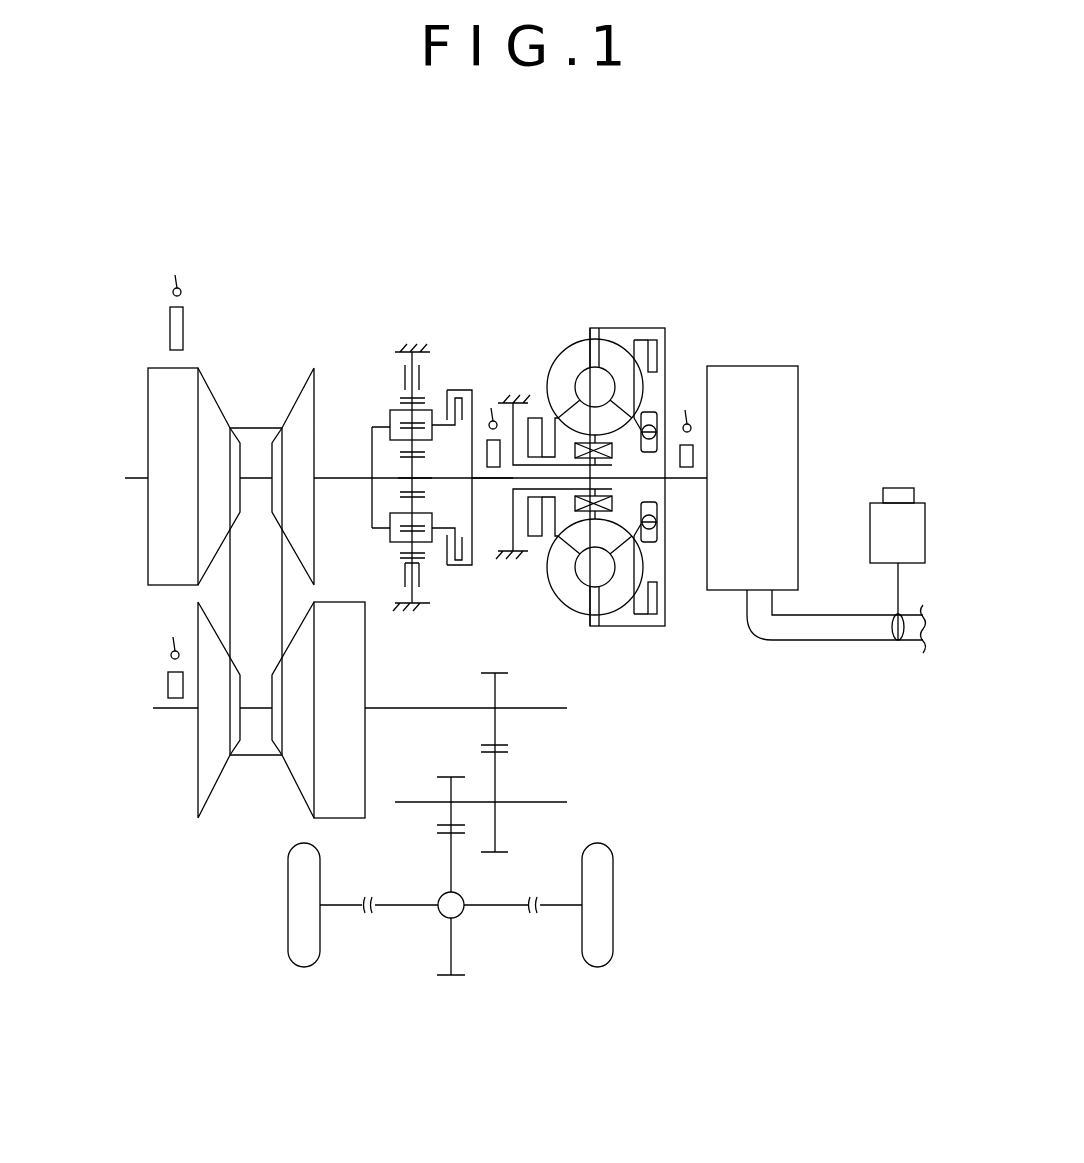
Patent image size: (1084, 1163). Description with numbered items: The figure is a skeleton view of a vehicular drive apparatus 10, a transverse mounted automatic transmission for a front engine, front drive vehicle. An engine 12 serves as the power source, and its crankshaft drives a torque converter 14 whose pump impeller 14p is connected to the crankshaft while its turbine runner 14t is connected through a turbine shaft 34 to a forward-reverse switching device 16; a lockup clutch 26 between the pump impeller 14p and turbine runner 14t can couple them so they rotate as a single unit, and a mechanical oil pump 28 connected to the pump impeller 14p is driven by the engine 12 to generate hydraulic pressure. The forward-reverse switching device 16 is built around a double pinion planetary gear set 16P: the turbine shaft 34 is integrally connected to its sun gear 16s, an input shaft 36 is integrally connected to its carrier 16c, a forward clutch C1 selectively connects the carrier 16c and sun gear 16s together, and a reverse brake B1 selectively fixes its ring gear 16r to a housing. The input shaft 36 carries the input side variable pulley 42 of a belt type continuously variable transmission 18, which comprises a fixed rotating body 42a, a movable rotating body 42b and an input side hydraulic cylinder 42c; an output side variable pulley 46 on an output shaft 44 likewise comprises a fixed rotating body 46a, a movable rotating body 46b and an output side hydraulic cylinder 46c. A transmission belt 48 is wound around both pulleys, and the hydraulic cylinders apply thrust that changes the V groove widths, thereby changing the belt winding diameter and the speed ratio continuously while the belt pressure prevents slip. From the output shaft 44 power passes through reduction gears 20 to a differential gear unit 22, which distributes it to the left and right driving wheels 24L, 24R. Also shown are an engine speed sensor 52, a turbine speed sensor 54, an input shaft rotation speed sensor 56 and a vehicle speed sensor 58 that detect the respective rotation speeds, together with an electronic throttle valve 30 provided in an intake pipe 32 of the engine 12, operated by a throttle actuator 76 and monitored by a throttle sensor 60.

The vehicular drive apparatus 10 is at (596, 237).
The engine 12 is at (787, 446).
The torque converter 14 is at (594, 316).
The pump impeller 14p is at (562, 597).
The turbine runner 14t is at (620, 602).
The forward-reverse switching device 16 is at (428, 302).
The planetary gear set 16P is at (381, 334).
The carrier 16c is at (389, 418).
The sun gear 16s is at (403, 488).
The ring gear 16r is at (403, 564).
The belt type continuously variable transmission 18 is at (243, 838).
The reduction gears 20 is at (566, 777).
The differential gear unit 22 is at (447, 915).
The left driving wheel 24L is at (298, 917).
The right driving wheel 24R is at (598, 917).
The lockup clutch 26 is at (656, 353).
The mechanical oil pump 28 is at (537, 428).
The electronic throttle valve 30 is at (907, 638).
The intake pipe 32 is at (830, 628).
The turbine shaft 34 is at (480, 487).
The input shaft 36 is at (332, 476).
The input side variable pulley 42 is at (211, 486).
The fixed rotating body 42a is at (302, 410).
The movable rotating body 42b is at (207, 407).
The input side hydraulic cylinder 42c is at (157, 400).
The output shaft 44 is at (415, 712).
The output side variable pulley 46 is at (276, 736).
The fixed rotating body 46a is at (207, 770).
The movable rotating body 46b is at (302, 760).
The output side hydraulic cylinder 46c is at (348, 677).
The transmission belt 48 is at (258, 426).
The engine speed sensor 52 is at (681, 455).
The turbine speed sensor 54 is at (486, 455).
The input shaft rotation speed sensor 56 is at (178, 325).
The vehicle speed sensor 58 is at (168, 684).
The throttle sensor 60 is at (898, 495).
The throttle actuator 76 is at (882, 547).
The reverse brake B1 is at (396, 376).
The forward clutch C1 is at (454, 464).